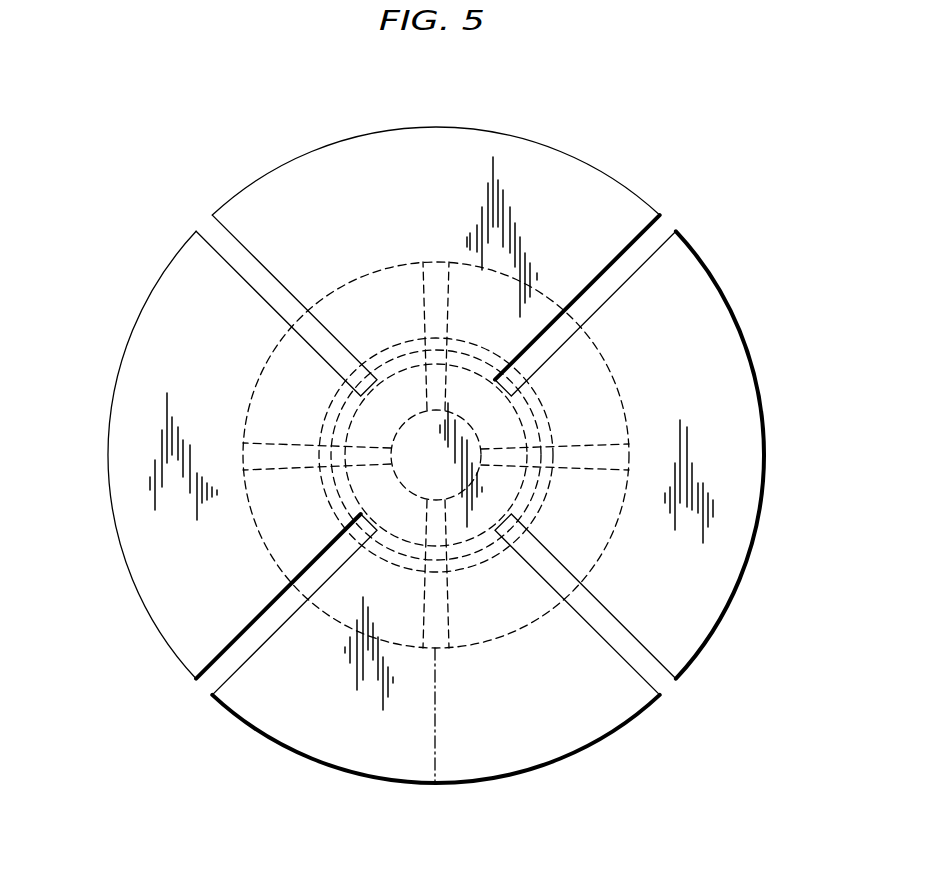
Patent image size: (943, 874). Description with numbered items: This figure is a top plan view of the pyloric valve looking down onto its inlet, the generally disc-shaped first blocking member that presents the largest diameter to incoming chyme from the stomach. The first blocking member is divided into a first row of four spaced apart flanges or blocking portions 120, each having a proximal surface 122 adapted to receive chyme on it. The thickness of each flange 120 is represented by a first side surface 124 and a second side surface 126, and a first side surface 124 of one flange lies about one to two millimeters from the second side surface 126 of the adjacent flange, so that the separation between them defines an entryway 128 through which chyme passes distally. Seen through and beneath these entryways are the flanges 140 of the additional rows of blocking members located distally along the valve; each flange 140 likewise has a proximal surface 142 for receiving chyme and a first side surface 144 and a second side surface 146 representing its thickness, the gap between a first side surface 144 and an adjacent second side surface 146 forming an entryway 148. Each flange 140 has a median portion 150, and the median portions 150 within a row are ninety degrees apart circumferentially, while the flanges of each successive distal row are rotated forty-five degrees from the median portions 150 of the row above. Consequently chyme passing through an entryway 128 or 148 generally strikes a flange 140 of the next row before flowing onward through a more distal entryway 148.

The flange 120 is at (153, 531).
The proximal surface 122 is at (383, 160).
The first side surface 124 is at (228, 238).
The second side surface 126 is at (655, 228).
The entryway 128 is at (212, 683).
The flange 140 is at (363, 273).
The proximal surface 142 is at (273, 377).
The first side surface 144 is at (265, 443).
The second side surface 146 is at (441, 270).
The entryway 148 is at (622, 457).
The median portion 150 is at (437, 760).